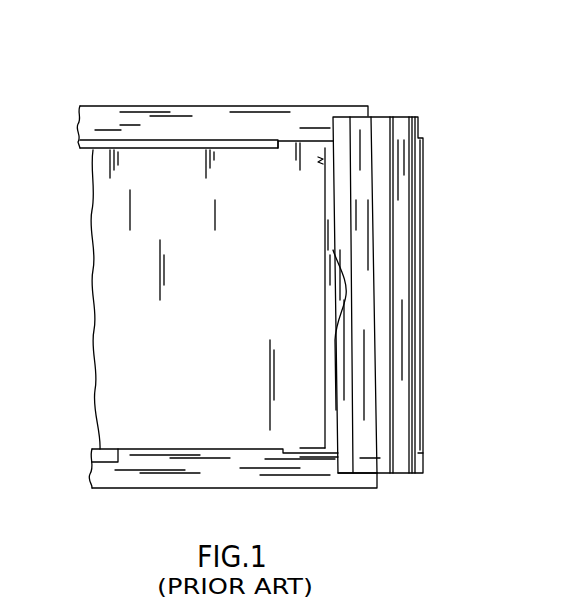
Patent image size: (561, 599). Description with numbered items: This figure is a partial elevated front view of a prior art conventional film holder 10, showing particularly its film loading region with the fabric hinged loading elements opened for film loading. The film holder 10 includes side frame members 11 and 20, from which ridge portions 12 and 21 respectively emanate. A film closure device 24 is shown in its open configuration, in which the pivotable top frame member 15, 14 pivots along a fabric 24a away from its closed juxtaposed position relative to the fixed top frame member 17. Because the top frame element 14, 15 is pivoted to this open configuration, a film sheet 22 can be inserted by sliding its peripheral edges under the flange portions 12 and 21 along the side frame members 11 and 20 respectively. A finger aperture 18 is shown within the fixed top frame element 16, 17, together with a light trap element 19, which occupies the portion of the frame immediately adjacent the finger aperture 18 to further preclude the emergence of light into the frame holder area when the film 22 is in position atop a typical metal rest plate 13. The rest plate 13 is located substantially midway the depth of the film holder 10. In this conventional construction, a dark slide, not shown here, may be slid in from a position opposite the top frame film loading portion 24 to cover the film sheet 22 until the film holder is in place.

The film holder 10 is at (325, 102).
The side frame member 11 is at (118, 122).
The ridge portion 12 is at (206, 148).
The metal rest plate 13 is at (332, 443).
The pivotable top frame member 14 is at (400, 130).
The pivotable top frame member 15 is at (373, 147).
The fixed top frame element 16 is at (368, 462).
The fixed top frame member 17 is at (342, 378).
The finger aperture 18 is at (345, 292).
The light trap element 19 is at (420, 190).
The side frame member 20 is at (163, 467).
The ridge portion 21 is at (100, 462).
The film sheet 22 is at (125, 403).
The film closure device 24 is at (397, 167).
The fabric 24a is at (387, 133).